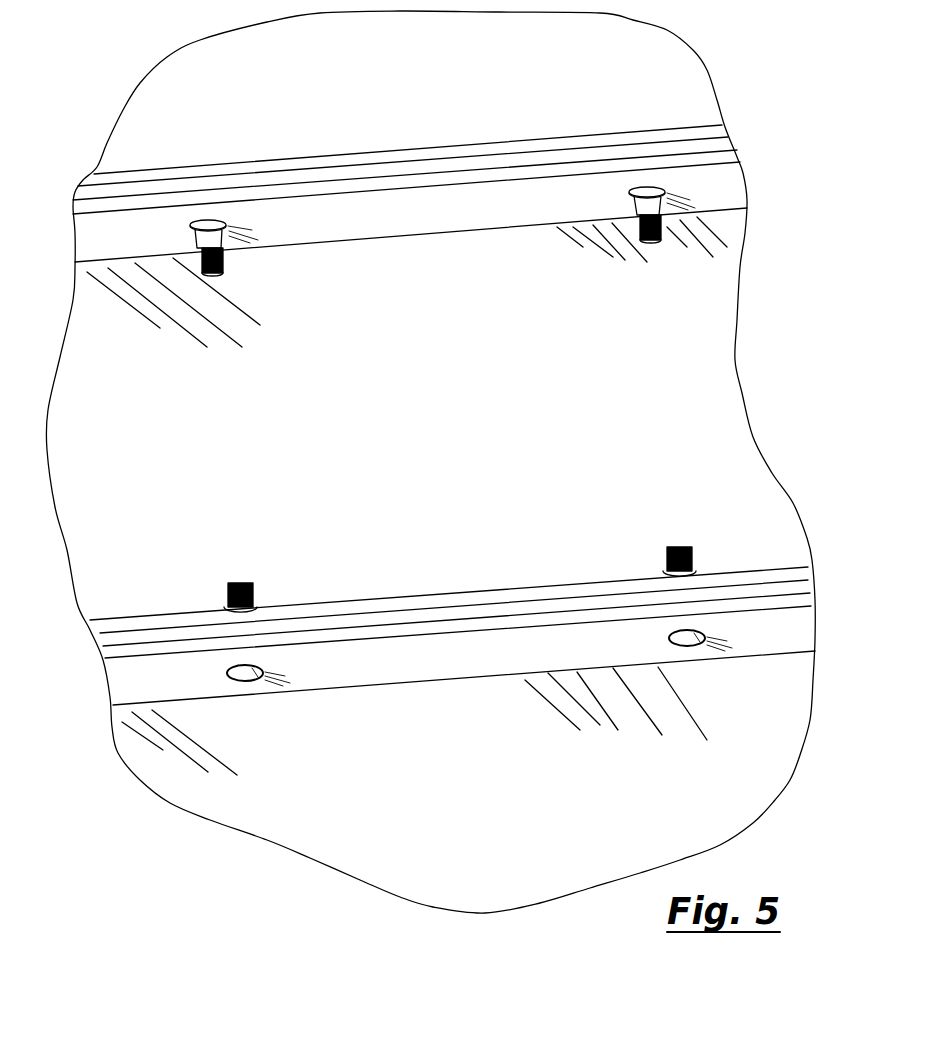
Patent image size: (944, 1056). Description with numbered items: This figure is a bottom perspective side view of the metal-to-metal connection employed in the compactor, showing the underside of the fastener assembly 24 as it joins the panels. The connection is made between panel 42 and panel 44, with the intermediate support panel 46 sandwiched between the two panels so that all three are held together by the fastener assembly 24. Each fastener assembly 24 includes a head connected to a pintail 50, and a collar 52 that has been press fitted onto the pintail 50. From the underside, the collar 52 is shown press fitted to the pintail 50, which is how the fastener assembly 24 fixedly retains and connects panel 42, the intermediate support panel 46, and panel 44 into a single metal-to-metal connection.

The fastener assembly 24 is at (442, 473).
The panel 42 is at (450, 154).
The panel 44 is at (727, 178).
The intermediate support panel 46 is at (130, 190).
The pintail 50 is at (657, 240).
The collar 52 is at (665, 190).